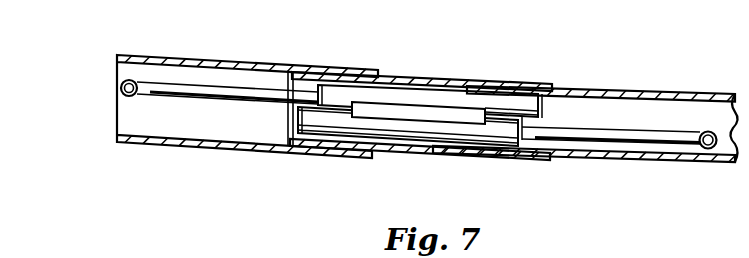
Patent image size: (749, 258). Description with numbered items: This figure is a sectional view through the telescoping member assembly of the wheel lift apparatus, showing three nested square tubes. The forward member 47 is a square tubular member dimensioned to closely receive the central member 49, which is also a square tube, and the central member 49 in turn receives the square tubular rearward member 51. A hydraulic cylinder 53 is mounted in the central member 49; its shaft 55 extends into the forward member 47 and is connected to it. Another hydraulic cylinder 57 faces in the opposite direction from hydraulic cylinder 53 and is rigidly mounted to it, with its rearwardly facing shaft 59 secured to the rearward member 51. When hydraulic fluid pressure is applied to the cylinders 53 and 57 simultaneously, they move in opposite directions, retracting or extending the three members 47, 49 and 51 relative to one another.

The forward member 47 is at (280, 66).
The central member 49 is at (480, 78).
The rearward member 51 is at (630, 90).
The hydraulic cylinder 53 is at (400, 85).
The shaft 55 is at (212, 86).
The hydraulic cylinder 57 is at (433, 150).
The right rod with eye 59 is at (606, 150).